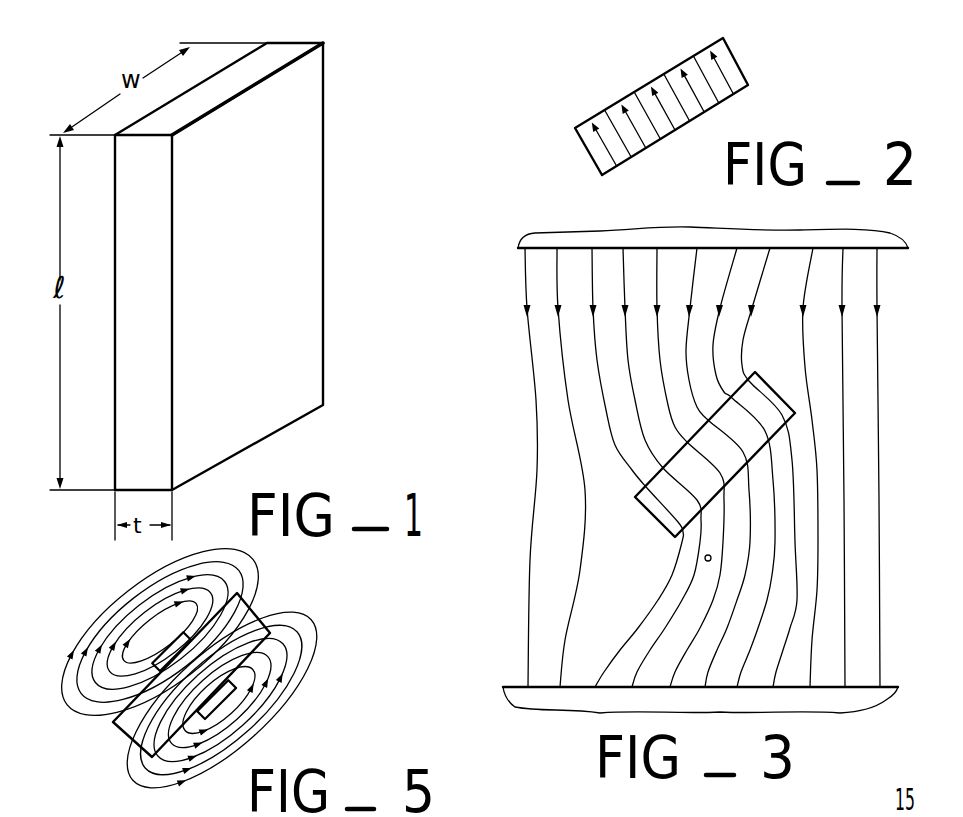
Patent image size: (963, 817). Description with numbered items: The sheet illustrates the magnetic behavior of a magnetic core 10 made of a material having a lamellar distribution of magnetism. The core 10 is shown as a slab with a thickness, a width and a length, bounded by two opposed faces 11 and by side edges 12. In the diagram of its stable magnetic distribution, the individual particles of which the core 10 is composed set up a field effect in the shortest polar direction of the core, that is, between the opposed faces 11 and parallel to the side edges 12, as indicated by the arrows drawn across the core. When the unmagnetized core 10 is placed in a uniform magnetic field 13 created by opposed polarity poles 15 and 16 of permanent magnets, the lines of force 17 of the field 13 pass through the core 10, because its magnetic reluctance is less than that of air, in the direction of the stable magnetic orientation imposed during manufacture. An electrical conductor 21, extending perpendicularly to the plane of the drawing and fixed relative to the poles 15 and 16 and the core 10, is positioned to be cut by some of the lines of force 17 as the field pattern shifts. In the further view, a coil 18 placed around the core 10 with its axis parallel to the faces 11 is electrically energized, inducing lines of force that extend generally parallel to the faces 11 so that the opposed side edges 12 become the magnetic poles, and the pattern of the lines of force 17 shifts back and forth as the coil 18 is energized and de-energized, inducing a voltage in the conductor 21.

In FIG. 1, the magnetic core 10 is at (262, 256).
In FIG. 2, the magnetic core 10 is at (676, 99).
In FIG. 3, the magnetic core 10 is at (648, 510).
In FIG. 5, the magnetic core 10 is at (197, 667).
In FIG. 1, the opposed faces 11 is at (292, 227).
In FIG. 2, the opposed faces 11 is at (637, 90).
In FIG. 5, the opposed faces 11 is at (257, 642).
In FIG. 1, the side edges 12 is at (285, 51).
In FIG. 2, the side edges 12 is at (749, 78).
In FIG. 5, the side edges 12 is at (272, 612).
In FIG. 3, the uniform magnetic field 13 is at (669, 467).
In FIG. 3, the pole 15 is at (887, 240).
In FIG. 3, the pole 16 is at (890, 687).
In FIG. 3, the lines of force 17 is at (595, 355).
In FIG. 5, the coil 18 is at (233, 695).
In FIG. 3, the electrical conductor 21 is at (704, 558).